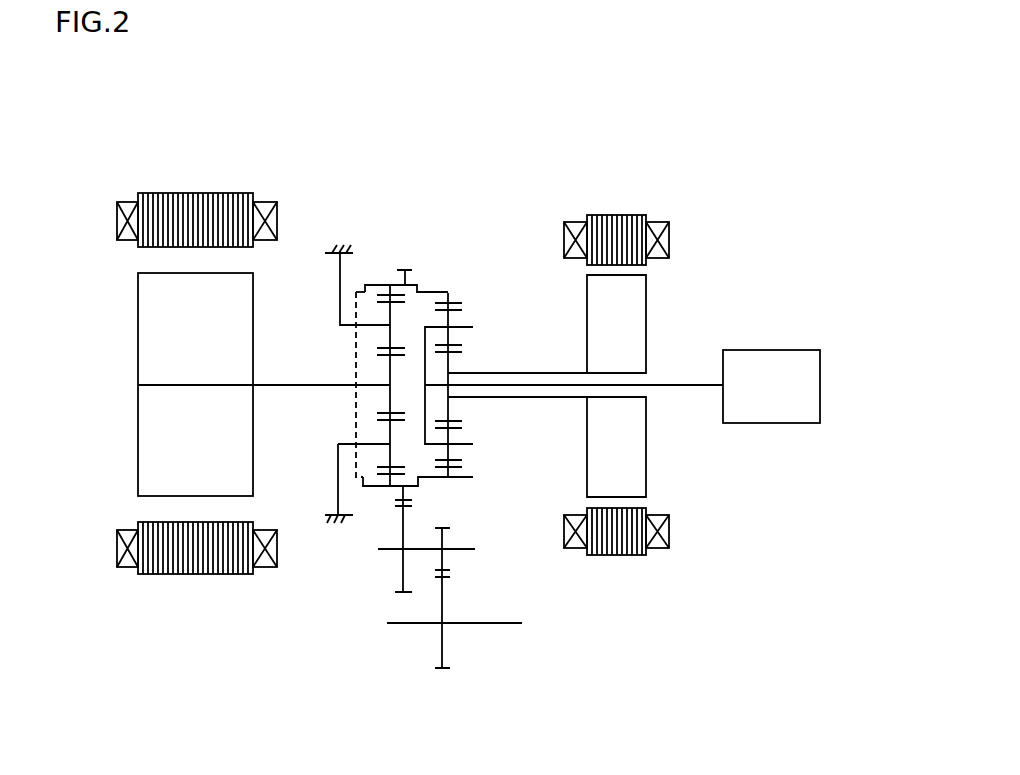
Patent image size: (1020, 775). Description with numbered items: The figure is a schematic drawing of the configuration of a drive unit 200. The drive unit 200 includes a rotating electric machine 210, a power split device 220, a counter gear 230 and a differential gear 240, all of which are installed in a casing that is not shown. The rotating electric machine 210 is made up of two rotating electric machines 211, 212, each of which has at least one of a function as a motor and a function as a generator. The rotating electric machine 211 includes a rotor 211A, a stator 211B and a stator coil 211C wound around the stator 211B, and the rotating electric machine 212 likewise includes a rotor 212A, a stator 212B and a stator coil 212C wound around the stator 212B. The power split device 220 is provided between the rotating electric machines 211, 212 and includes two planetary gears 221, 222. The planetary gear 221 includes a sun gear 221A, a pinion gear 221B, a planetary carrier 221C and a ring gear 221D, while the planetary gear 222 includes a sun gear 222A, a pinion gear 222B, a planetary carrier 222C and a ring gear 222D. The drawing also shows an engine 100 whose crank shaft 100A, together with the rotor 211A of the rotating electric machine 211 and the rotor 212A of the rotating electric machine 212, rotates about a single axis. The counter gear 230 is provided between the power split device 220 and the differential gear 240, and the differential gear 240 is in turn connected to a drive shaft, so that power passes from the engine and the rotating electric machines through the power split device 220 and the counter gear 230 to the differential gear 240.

The engine 100 is at (803, 350).
The crank shaft 100A is at (685, 387).
The drive unit 200 is at (150, 118).
The rotating electric machine 210 is at (593, 112).
The rotating electric machine 211 is at (583, 208).
The rotor 211A is at (646, 325).
The stator 211B is at (617, 214).
The stator coil 211C is at (577, 549).
The rotating electric machine 212 is at (243, 177).
The rotor 212A is at (138, 308).
The stator 212B is at (165, 192).
The stator coil 212C is at (125, 568).
The power split device 220 is at (475, 212).
The planetary gear 221 is at (475, 266).
The sun gear 221A is at (440, 364).
The pinion gear 221B is at (452, 313).
The planetary carrier 221C is at (440, 336).
The ring gear 221D is at (450, 297).
The planetary gear 222 is at (415, 266).
The sun gear 222A is at (388, 370).
The pinion gear 222B is at (388, 336).
The planetary carrier 222C is at (340, 313).
The ring gear 222D is at (365, 289).
The counter gear 230 is at (393, 555).
The differential gear 240 is at (443, 600).